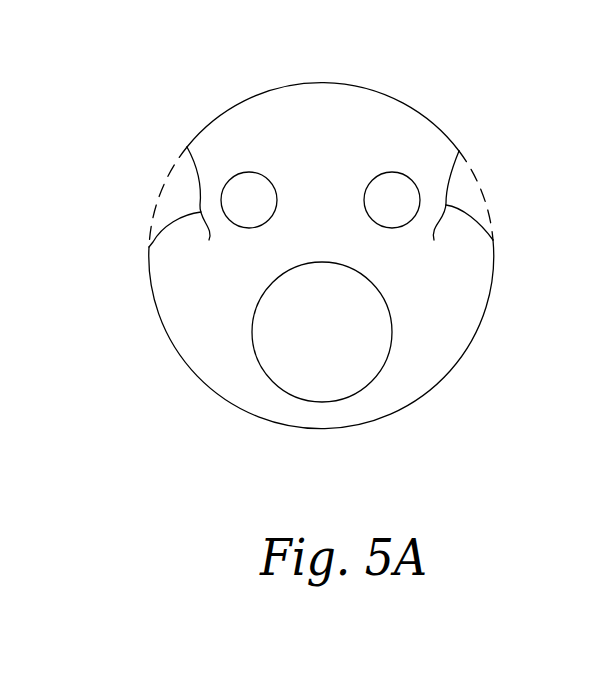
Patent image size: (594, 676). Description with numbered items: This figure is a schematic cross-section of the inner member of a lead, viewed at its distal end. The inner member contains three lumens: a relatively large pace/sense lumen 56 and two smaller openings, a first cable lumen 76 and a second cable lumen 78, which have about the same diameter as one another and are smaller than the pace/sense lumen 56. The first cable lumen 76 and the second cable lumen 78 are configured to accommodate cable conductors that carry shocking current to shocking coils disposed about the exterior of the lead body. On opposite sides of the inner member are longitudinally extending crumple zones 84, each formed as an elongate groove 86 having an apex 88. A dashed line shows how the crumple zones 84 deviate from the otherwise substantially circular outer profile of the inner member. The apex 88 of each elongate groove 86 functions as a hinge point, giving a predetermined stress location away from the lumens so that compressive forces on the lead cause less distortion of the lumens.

The pace/sense lumen 56 is at (330, 365).
The first cable lumen 76 is at (243, 193).
The second cable lumen 78 is at (395, 192).
The longitudinally extending crumple zones 84 is at (136, 175).
The elongate groove 86 is at (132, 218).
The apex 88 is at (209, 240).